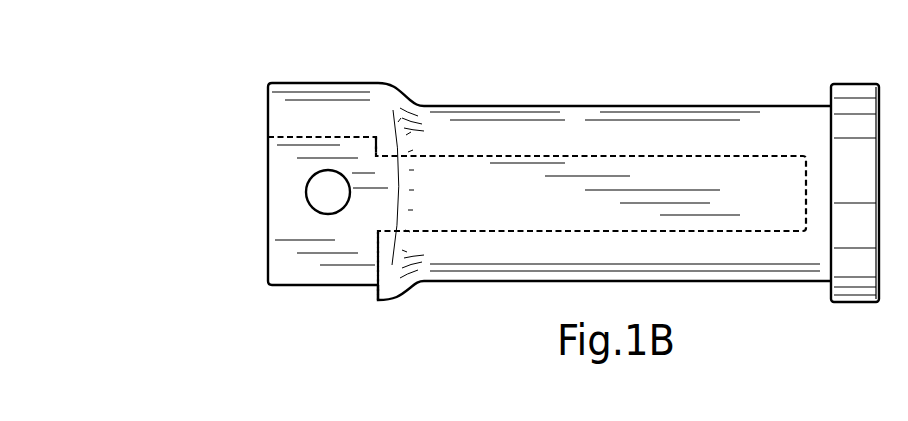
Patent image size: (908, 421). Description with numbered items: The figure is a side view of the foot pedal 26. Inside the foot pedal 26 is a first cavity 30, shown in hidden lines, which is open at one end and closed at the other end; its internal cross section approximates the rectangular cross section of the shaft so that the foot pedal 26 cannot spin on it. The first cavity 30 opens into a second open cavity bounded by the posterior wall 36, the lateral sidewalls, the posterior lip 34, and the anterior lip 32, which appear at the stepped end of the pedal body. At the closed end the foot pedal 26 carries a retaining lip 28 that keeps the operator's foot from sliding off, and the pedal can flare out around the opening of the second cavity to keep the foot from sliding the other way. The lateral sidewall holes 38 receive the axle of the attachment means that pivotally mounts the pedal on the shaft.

The foot pedal 26 is at (730, 104).
The retaining lip 28 is at (853, 84).
The first cavity 30 is at (518, 178).
The anterior lip 32 is at (377, 260).
The posterior lip 34 is at (362, 137).
The posterior wall 36 is at (292, 138).
The lateral sidewall holes 38 is at (317, 193).